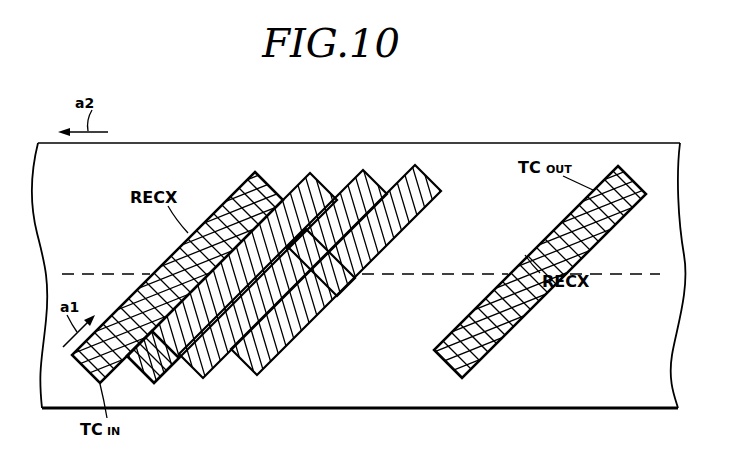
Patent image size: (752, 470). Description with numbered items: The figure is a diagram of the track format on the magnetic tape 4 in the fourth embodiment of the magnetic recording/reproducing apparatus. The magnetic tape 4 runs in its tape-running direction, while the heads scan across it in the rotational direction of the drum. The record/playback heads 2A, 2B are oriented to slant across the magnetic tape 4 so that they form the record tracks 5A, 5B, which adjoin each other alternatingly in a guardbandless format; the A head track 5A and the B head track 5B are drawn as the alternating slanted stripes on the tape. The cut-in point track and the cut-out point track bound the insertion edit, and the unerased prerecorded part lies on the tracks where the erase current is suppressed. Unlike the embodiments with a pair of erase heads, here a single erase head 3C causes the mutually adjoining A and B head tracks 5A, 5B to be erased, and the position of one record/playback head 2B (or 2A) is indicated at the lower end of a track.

The magnetic tape 4 is at (152, 150).
The record track (A head track) 5A is at (266, 180).
The record track (B head track) 5B is at (320, 182).
The single erase head 3C is at (347, 282).
The record/playback head (B head) 2B is at (182, 386).
The record/playback head (A head) 2A is at (167, 370).